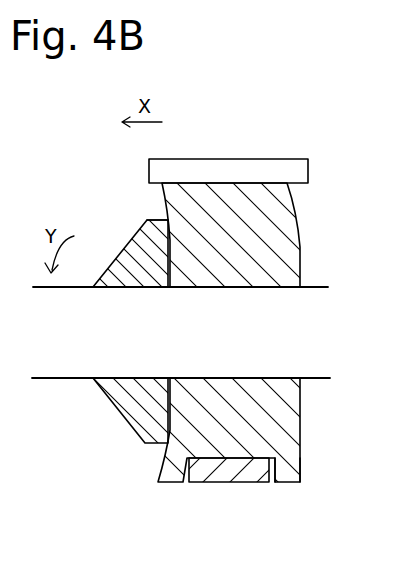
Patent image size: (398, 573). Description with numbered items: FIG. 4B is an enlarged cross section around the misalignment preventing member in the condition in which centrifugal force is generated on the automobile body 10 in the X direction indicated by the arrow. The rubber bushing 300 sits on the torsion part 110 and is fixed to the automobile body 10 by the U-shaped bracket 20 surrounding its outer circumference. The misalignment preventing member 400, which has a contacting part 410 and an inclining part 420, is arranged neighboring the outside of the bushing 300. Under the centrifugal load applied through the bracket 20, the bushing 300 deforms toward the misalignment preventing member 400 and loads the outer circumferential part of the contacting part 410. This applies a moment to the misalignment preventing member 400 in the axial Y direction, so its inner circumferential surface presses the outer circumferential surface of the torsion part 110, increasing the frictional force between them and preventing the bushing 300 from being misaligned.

The automobile body 10 is at (192, 170).
The torsion part 110 is at (317, 298).
The misalignment preventing member 400 is at (142, 174).
The contacting part 410 is at (148, 220).
The inclining part 420 is at (122, 248).
The bracket 20 is at (227, 470).
The bushing 300 is at (290, 470).